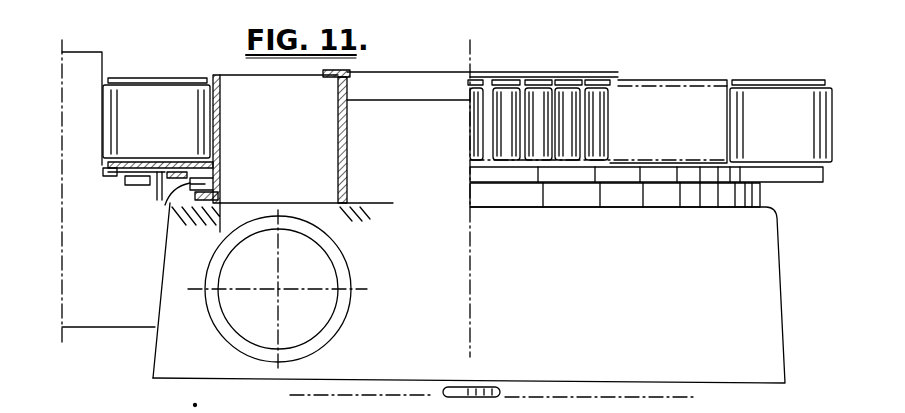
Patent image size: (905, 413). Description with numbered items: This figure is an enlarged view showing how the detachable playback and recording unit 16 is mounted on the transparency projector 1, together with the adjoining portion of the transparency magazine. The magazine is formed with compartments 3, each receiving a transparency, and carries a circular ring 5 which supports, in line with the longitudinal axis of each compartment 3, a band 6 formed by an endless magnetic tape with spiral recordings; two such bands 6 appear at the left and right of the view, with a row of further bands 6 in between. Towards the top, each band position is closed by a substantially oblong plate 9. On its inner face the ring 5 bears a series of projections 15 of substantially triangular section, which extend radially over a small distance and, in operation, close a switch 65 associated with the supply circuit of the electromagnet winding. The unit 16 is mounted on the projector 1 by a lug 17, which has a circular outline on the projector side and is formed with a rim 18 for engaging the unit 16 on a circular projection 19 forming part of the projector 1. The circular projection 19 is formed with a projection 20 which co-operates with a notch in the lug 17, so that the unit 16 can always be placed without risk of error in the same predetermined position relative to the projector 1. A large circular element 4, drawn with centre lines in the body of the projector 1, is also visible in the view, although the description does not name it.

The transparency projector 1 is at (727, 370).
The compartment 3 is at (231, 94).
The bore 4 is at (337, 273).
The circular ring 5 is at (160, 185).
The band 6 is at (129, 98).
The oblong plate 9 is at (153, 78).
The projection 15 is at (110, 166).
The unit 16 is at (117, 342).
The lug 17 is at (160, 190).
The rim 18 is at (218, 168).
The circular projection 19 is at (162, 200).
The projection 20 is at (218, 183).
The switch 65 is at (132, 183).